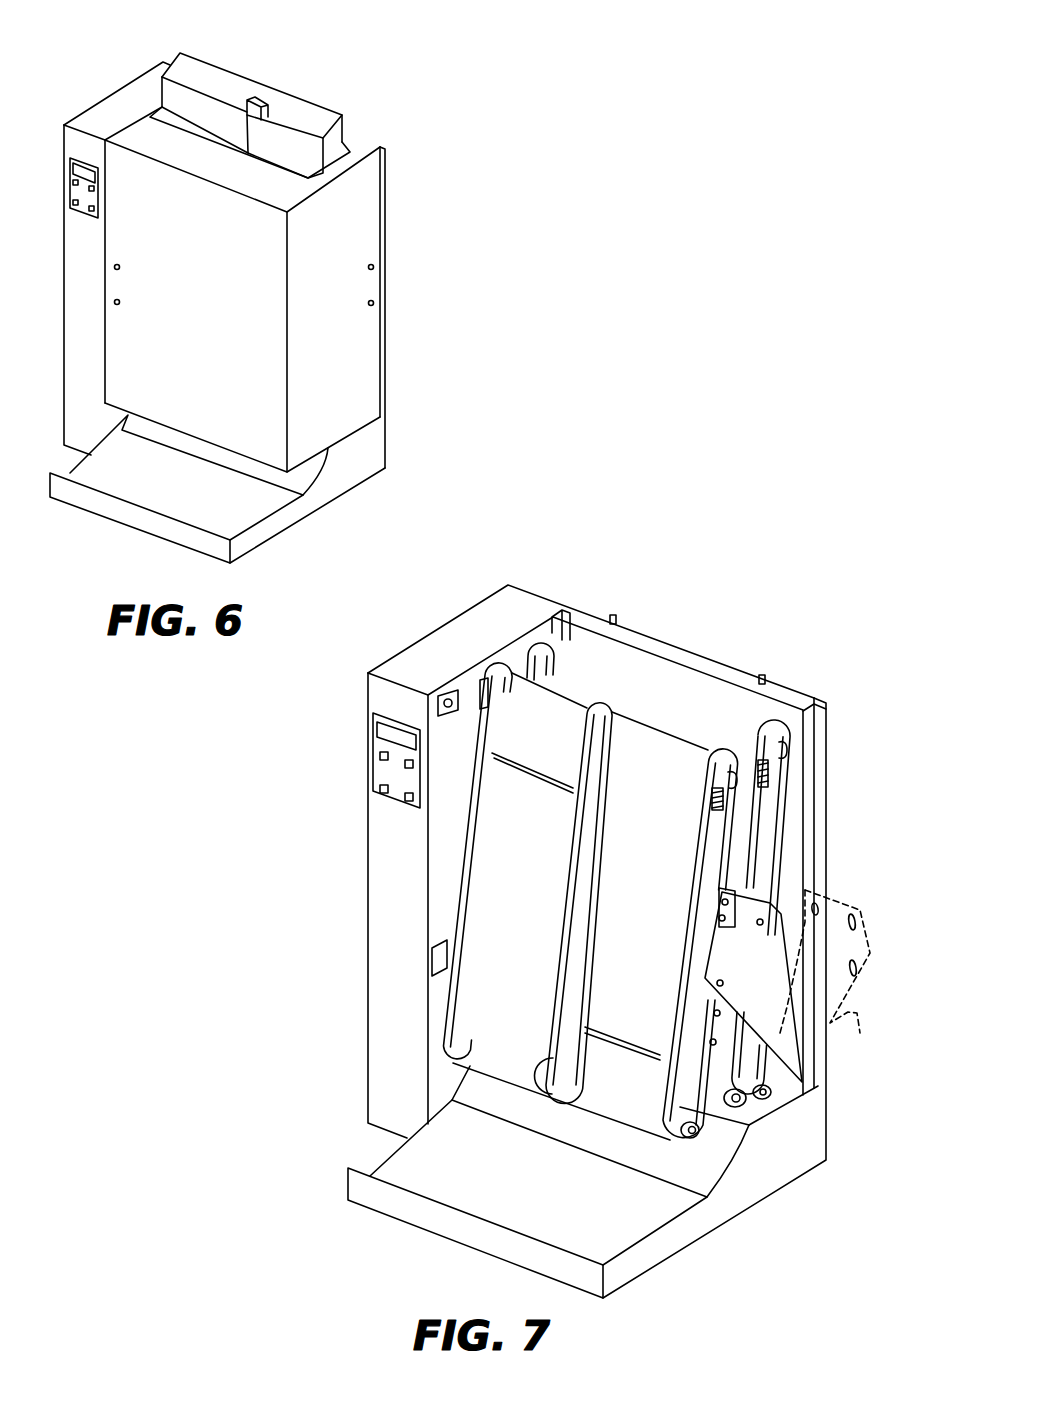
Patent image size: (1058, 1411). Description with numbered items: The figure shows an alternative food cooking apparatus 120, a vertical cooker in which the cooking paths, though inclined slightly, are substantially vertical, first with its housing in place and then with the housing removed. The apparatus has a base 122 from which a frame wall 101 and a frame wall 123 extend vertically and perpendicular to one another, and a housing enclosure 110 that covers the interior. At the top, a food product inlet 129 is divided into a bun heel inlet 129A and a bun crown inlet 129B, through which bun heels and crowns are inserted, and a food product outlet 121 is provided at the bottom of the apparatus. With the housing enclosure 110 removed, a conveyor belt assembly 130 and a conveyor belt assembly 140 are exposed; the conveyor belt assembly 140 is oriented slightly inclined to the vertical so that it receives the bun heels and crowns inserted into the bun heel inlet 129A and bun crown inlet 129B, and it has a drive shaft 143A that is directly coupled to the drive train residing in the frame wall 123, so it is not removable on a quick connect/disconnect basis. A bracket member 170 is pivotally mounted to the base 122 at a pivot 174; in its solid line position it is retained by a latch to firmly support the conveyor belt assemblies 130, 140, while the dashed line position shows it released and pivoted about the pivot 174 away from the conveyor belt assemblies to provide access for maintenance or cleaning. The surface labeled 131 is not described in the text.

In FIG. 6, the food cooking apparatus 120 is at (487, 93).
In FIG. 7, the food cooking apparatus 120 is at (722, 577).
In FIG. 6, the frame wall 123 is at (110, 112).
In FIG. 6, the housing enclosure 110 is at (355, 218).
In FIG. 6, the frame wall 101 is at (385, 363).
In FIG. 7, the frame wall 101 is at (795, 692).
In FIG. 6, the food product inlet 129 is at (314, 83).
In FIG. 6, the bun heel inlet 129A is at (225, 82).
In FIG. 6, the bun crown inlet 129B is at (308, 123).
In FIG. 6, the base 122 is at (363, 453).
In FIG. 6, the food product outlet 121 is at (232, 521).
In FIG. 7, the conveyor belt assembly 130 is at (700, 684).
In FIG. 7, the back plate surface 131 is at (672, 709).
In FIG. 7, the conveyor belt assembly 140 is at (583, 677).
In FIG. 7, the drive shaft 143A is at (700, 1134).
In FIG. 7, the bracket member 170 is at (788, 1041).
In FIG. 7, the pivot 174 is at (761, 1097).